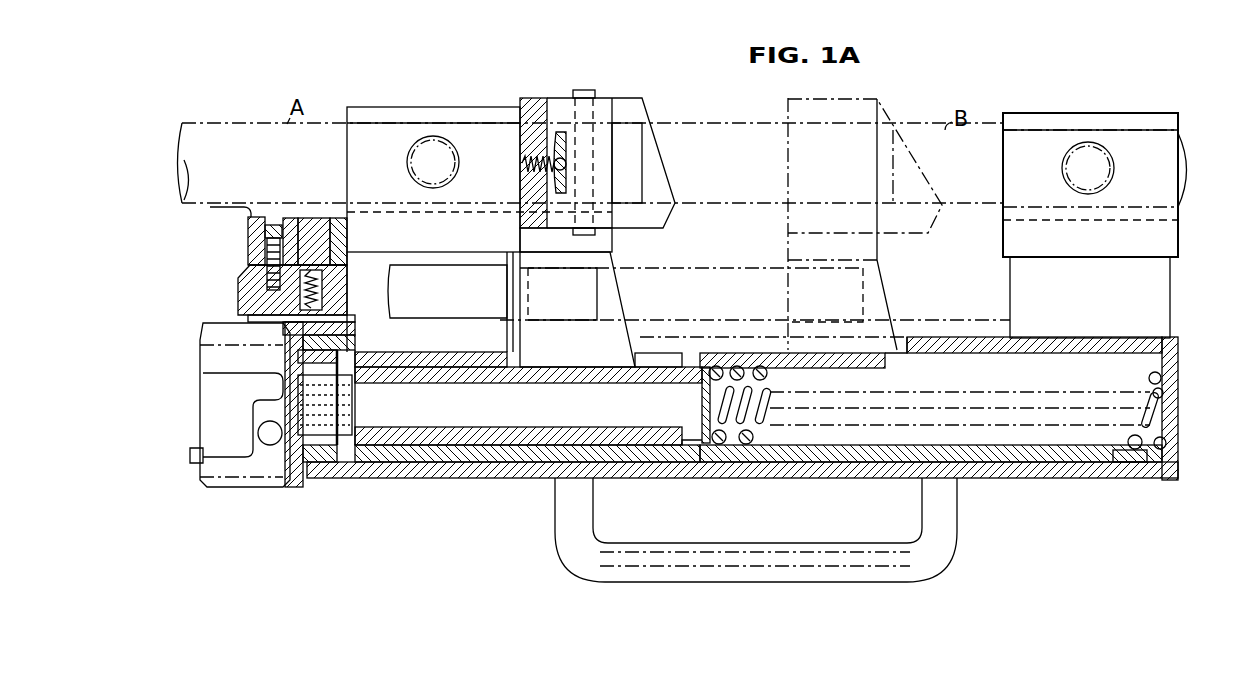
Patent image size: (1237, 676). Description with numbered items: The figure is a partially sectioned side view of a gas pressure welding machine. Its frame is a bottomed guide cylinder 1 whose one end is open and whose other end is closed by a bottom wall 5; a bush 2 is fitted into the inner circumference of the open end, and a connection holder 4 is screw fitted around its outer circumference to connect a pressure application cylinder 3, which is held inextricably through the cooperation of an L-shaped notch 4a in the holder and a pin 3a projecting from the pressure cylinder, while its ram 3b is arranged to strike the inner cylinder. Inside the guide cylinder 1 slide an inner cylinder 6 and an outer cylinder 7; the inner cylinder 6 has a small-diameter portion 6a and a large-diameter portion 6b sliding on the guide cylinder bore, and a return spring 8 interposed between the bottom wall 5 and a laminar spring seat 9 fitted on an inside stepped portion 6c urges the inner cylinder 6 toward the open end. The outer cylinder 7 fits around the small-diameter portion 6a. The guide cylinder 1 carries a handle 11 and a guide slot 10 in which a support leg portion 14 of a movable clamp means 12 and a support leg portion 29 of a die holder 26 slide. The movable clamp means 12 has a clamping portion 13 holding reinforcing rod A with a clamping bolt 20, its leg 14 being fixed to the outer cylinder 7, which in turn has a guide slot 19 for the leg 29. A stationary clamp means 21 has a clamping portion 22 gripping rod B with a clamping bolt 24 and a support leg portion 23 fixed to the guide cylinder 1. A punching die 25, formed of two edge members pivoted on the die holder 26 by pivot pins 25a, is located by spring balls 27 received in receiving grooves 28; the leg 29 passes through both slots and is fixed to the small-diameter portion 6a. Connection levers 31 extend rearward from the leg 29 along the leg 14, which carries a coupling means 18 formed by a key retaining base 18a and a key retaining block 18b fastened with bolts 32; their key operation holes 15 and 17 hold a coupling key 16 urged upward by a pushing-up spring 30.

The guide cylinder 1 is at (493, 463).
The bush 2 is at (317, 458).
The pressure application cylinder 3 is at (198, 462).
The pin 3a is at (347, 420).
The ball 3b is at (270, 445).
The connection holder 4 is at (240, 468).
The L-shaped notch 4a is at (227, 390).
The bottom wall 5 is at (1168, 470).
The inner cylinder 6 is at (457, 438).
The small-diameter portion 6a is at (540, 433).
The large-diameter portion 6b is at (790, 452).
The inside stepped portion 6c is at (700, 445).
The outer cylinder 7 is at (400, 450).
The return spring 8 is at (745, 445).
The laminar spring seat 9 is at (718, 445).
The guide slot 10 is at (803, 355).
The handle 11 is at (747, 555).
The movable clamp means 12 is at (425, 100).
The clamping portion 13 is at (362, 130).
The support leg portion 14 is at (407, 253).
The key operation hole 15 is at (248, 267).
The coupling key 16 is at (313, 243).
The key operation hole 17 is at (325, 237).
The coupling means 18 is at (246, 212).
The key retaining base 18a is at (250, 305).
The key retaining block 18b is at (250, 228).
The guide slot 19 is at (663, 357).
The clamping bolt 20 is at (445, 140).
The stationary clamp means 21 is at (1115, 122).
The clamping portion 22 is at (1036, 130).
The support leg portion 23 is at (1010, 312).
The clamping bolt 24 is at (1088, 150).
The punching die 25 is at (650, 100).
The pivot pins 25a is at (597, 92).
The die holder 26 is at (525, 112).
The spring balls 27 is at (556, 155).
The receiving grooves 28 is at (572, 167).
The support leg portion 29 is at (620, 297).
The pushing-up spring 30 is at (300, 292).
The connection levers 31 is at (498, 298).
The bolts 32 is at (347, 215).